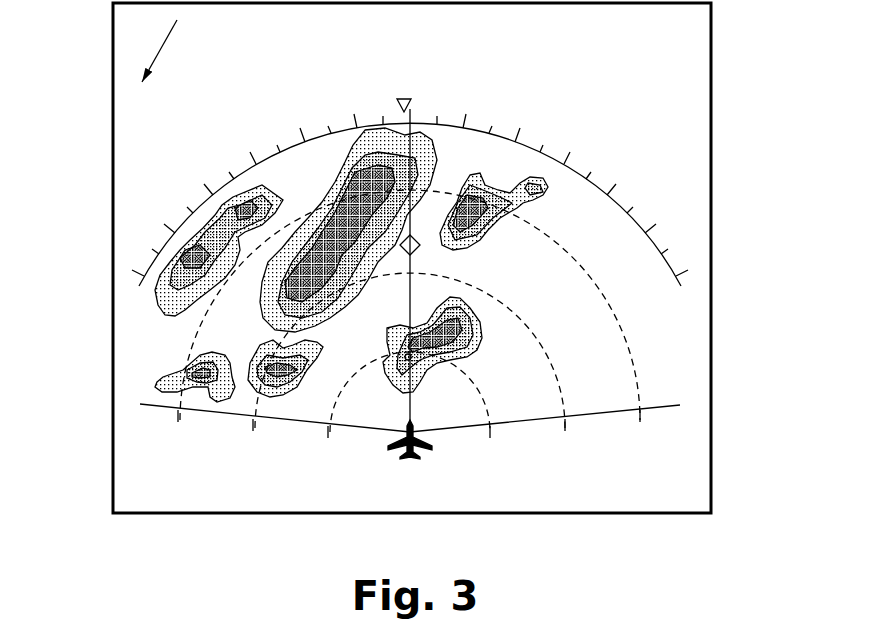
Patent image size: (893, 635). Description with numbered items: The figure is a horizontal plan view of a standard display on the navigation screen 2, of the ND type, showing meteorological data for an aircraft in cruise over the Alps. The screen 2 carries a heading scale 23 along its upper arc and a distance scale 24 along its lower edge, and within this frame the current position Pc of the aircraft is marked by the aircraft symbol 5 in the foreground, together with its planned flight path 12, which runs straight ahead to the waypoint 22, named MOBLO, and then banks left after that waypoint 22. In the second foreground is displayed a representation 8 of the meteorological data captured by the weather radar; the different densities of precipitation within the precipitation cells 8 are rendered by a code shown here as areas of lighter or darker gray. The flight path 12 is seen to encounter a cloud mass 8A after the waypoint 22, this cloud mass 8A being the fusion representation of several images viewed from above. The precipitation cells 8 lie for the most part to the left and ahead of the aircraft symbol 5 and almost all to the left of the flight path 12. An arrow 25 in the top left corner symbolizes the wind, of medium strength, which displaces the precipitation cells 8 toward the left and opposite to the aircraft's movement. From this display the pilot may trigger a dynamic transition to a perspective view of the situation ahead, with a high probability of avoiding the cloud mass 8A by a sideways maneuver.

The screen 2 is at (626, 513).
The aircraft symbol 5 is at (403, 452).
The representation of meteorological data 8 is at (418, 138).
The cloud mass 8A is at (333, 172).
The flight path 12 is at (403, 240).
The waypoint 22 is at (482, 180).
The heading scale 23 is at (652, 185).
The distance scale 24 is at (155, 420).
The arrow 25 is at (168, 44).
The current position Pc is at (422, 455).